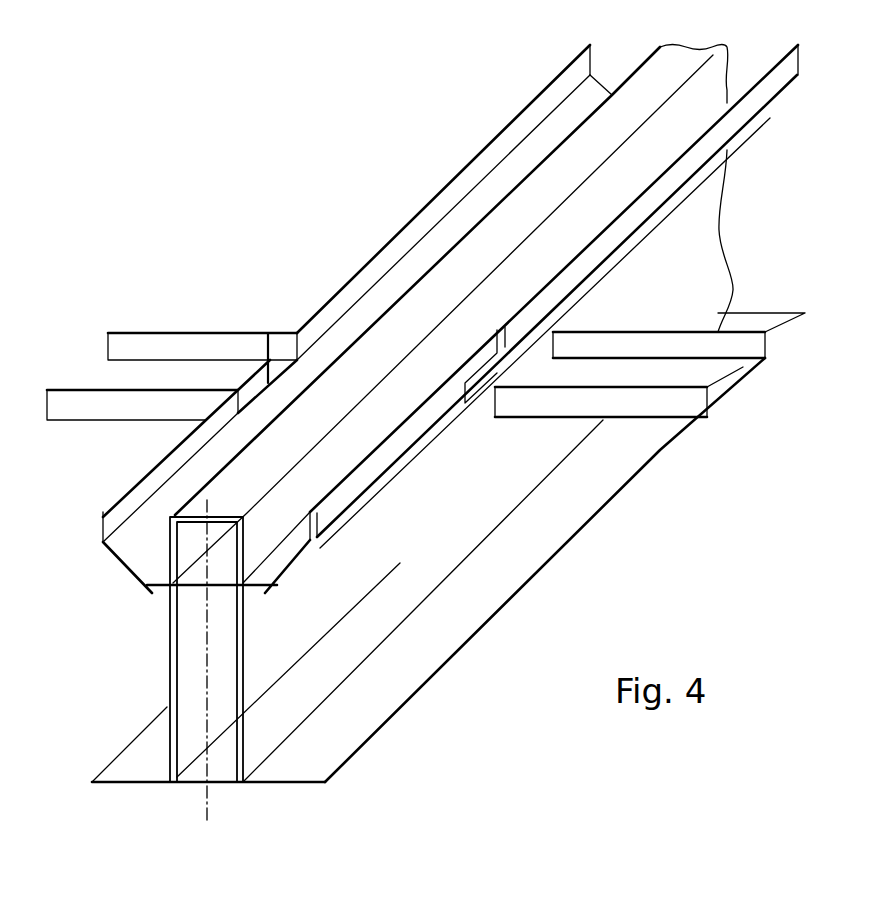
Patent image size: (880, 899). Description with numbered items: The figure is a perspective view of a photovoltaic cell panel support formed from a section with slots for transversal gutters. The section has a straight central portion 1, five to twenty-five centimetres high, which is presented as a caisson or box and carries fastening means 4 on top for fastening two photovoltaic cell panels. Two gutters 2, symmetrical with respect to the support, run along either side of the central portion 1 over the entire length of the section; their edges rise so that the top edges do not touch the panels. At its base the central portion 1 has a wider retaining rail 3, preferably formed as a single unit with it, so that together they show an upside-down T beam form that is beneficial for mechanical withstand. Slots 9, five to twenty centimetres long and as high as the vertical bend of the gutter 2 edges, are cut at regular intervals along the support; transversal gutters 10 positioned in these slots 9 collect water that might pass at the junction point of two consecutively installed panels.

The central portion 1 is at (242, 700).
The gutters 2 is at (127, 563).
The retaining rail 3 is at (143, 782).
The fastening means 4 is at (245, 485).
The slots 9 is at (268, 333).
The transversal gutters 10 is at (213, 330).